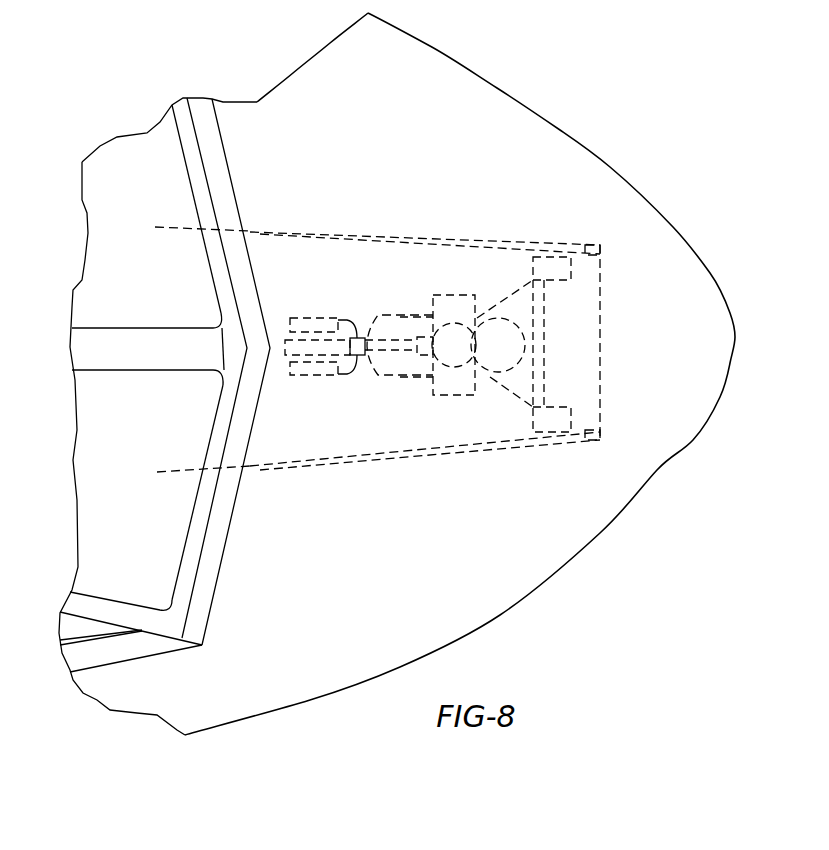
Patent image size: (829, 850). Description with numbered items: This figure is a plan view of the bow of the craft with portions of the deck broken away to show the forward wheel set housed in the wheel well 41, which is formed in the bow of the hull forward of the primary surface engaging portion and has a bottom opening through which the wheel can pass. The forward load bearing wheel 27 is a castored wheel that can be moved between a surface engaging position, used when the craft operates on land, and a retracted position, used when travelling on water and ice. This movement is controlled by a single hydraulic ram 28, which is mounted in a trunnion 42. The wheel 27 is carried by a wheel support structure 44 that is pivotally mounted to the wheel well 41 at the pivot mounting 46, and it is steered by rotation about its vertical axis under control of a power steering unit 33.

The forward load bearing wheel 27 is at (373, 317).
The hydraulic ram 28 is at (293, 350).
The power steering unit 33 is at (462, 390).
The wheel well 41 is at (593, 372).
The trunnion 42 is at (308, 322).
The wheel support structure 44 is at (510, 295).
The pivot mounting 46 is at (558, 242).